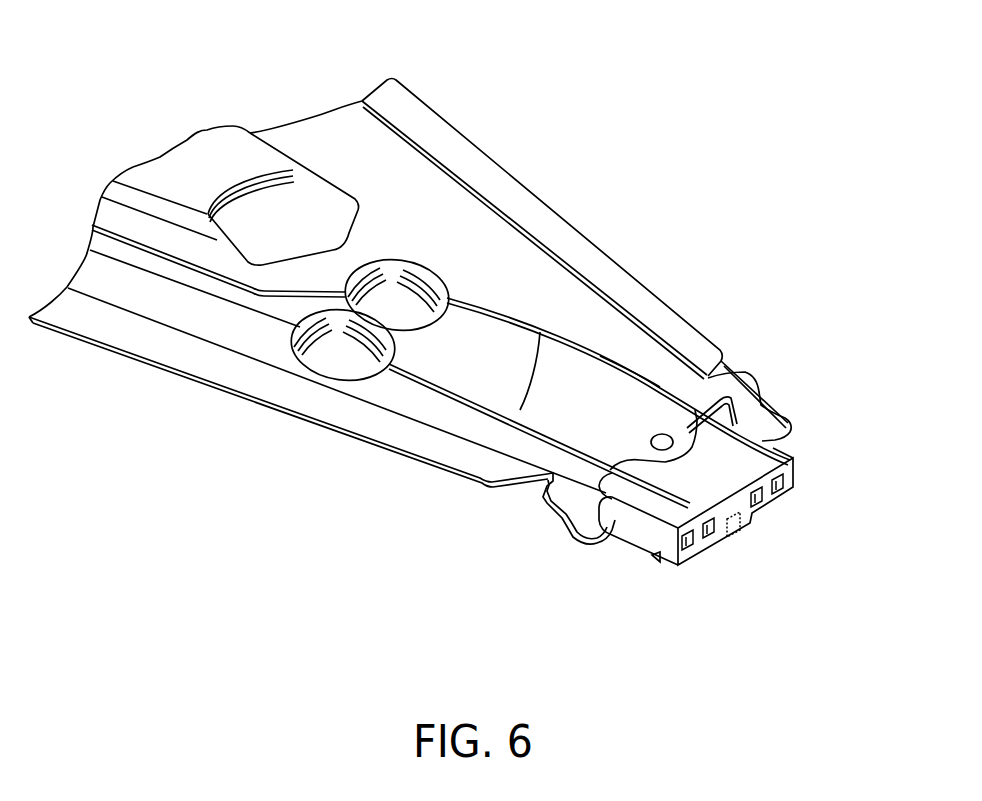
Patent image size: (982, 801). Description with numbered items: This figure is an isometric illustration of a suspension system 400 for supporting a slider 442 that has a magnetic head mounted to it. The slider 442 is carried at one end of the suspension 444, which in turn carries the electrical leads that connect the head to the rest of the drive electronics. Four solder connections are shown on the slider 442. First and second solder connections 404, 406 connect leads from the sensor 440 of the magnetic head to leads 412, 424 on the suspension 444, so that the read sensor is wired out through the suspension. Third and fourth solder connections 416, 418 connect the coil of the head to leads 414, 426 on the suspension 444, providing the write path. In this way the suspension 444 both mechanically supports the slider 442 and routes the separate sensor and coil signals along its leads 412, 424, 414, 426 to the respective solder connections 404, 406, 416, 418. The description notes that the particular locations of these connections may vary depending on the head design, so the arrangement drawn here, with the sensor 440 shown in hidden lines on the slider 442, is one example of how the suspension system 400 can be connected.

The suspension system 400 is at (590, 55).
The suspension 444 is at (573, 215).
The lead 414 is at (630, 362).
The lead 412 is at (413, 387).
The lead 424 is at (457, 401).
The lead 426 is at (520, 410).
The slider 442 is at (610, 556).
The first solder connection 404 is at (690, 552).
The second solder connection 406 is at (712, 537).
The third solder connection 416 is at (784, 484).
The fourth solder connection 418 is at (764, 493).
The sensor 440 is at (743, 536).